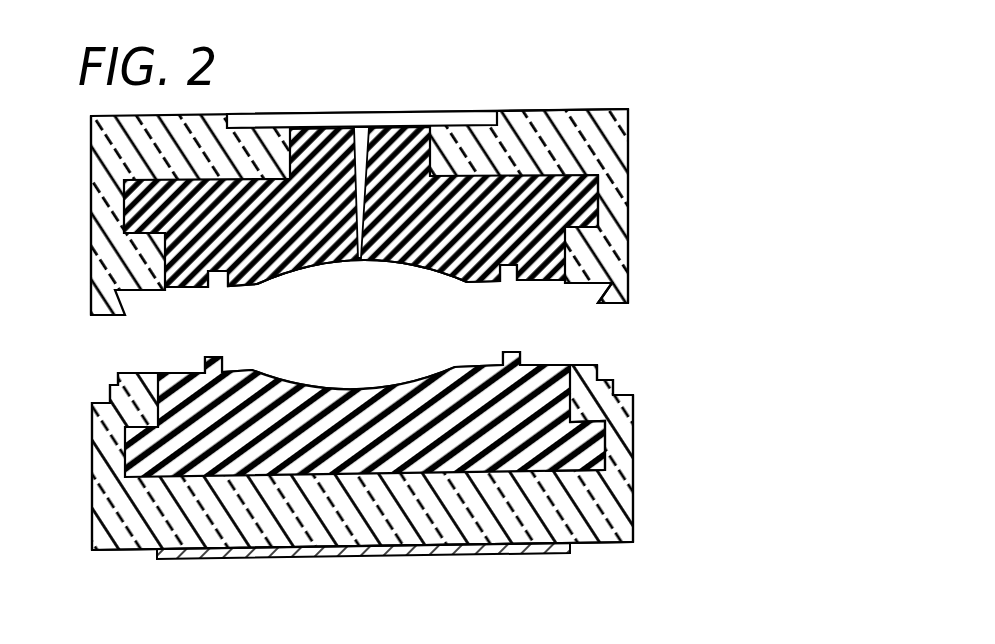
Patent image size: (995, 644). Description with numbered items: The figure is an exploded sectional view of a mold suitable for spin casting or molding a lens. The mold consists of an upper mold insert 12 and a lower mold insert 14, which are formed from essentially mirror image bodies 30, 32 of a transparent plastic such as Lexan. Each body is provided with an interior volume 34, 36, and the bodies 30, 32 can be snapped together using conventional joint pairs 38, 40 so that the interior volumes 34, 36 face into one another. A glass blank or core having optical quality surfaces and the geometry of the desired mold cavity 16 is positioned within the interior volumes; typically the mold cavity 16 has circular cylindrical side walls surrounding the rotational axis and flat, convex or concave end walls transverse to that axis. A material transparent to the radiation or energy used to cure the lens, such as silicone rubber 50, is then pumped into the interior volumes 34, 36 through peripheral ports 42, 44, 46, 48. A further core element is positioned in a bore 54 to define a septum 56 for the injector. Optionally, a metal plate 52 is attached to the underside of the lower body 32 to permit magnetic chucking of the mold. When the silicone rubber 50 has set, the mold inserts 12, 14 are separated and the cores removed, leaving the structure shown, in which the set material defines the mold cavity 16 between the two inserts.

The upper mold insert 12 is at (628, 243).
The lower mold insert 14 is at (633, 482).
The mold cavity 16 is at (430, 268).
The body 30 is at (540, 123).
The body 32 is at (593, 548).
The interior volume 34 is at (591, 165).
The interior volume 36 is at (543, 464).
The joint pair 38 is at (618, 305).
The joint pair 40 is at (613, 383).
The peripheral port 42 is at (628, 197).
The peripheral port 44 is at (633, 432).
The peripheral port 46 is at (92, 429).
The peripheral port 48 is at (92, 203).
The silicone rubber 50 is at (280, 263).
The metal plate 52 is at (368, 552).
The bore 54 is at (437, 142).
The septum 56 is at (361, 124).